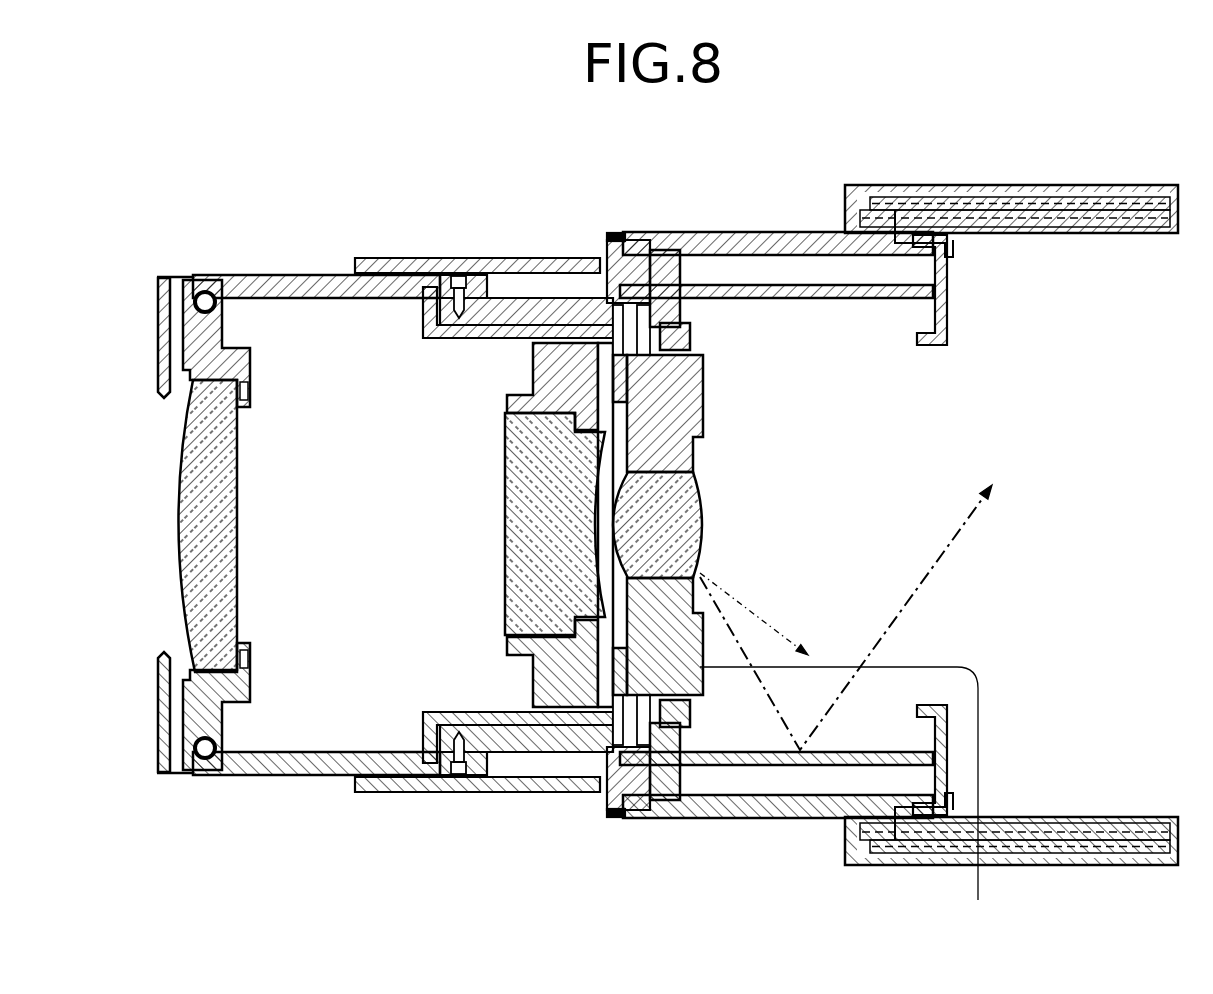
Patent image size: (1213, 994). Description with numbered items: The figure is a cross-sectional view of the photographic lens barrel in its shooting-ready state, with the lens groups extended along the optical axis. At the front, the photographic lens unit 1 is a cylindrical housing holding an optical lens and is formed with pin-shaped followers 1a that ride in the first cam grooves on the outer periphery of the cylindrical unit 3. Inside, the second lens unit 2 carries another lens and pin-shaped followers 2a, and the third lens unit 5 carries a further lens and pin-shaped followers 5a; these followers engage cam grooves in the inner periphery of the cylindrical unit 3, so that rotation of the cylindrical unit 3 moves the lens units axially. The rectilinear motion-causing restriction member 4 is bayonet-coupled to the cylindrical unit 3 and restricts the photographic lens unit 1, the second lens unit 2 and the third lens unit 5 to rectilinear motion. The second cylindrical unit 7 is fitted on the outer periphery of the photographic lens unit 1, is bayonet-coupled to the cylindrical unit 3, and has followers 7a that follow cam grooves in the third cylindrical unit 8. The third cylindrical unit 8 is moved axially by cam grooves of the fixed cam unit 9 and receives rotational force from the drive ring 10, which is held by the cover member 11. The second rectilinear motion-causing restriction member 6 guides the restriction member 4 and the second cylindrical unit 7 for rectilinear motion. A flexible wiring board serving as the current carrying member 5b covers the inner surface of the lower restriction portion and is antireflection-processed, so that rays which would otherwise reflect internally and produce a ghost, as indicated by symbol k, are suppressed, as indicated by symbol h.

The photographic lens unit 1 is at (208, 197).
The pin-shaped followers 1a is at (462, 752).
The second lens unit 2 is at (488, 460).
The pin-shaped followers 2a is at (648, 737).
The cylindrical unit 3 is at (530, 298).
The rectilinear motion-causing restriction member 4 is at (547, 722).
The third lens unit 5 is at (752, 445).
The pin-shaped followers 5a is at (628, 290).
The current carrying member 5b is at (840, 665).
The second rectilinear motion-causing restriction member 6 is at (950, 312).
The second cylindrical unit 7 is at (412, 267).
The followers 7a is at (626, 802).
The third cylindrical unit 8 is at (716, 238).
The fixed cam unit 9 is at (1062, 215).
The drive ring 10 is at (980, 202).
The cover member 11 is at (873, 862).
The symbol indicating prevention of ghost h is at (787, 630).
The symbol indicating ghost k is at (940, 557).